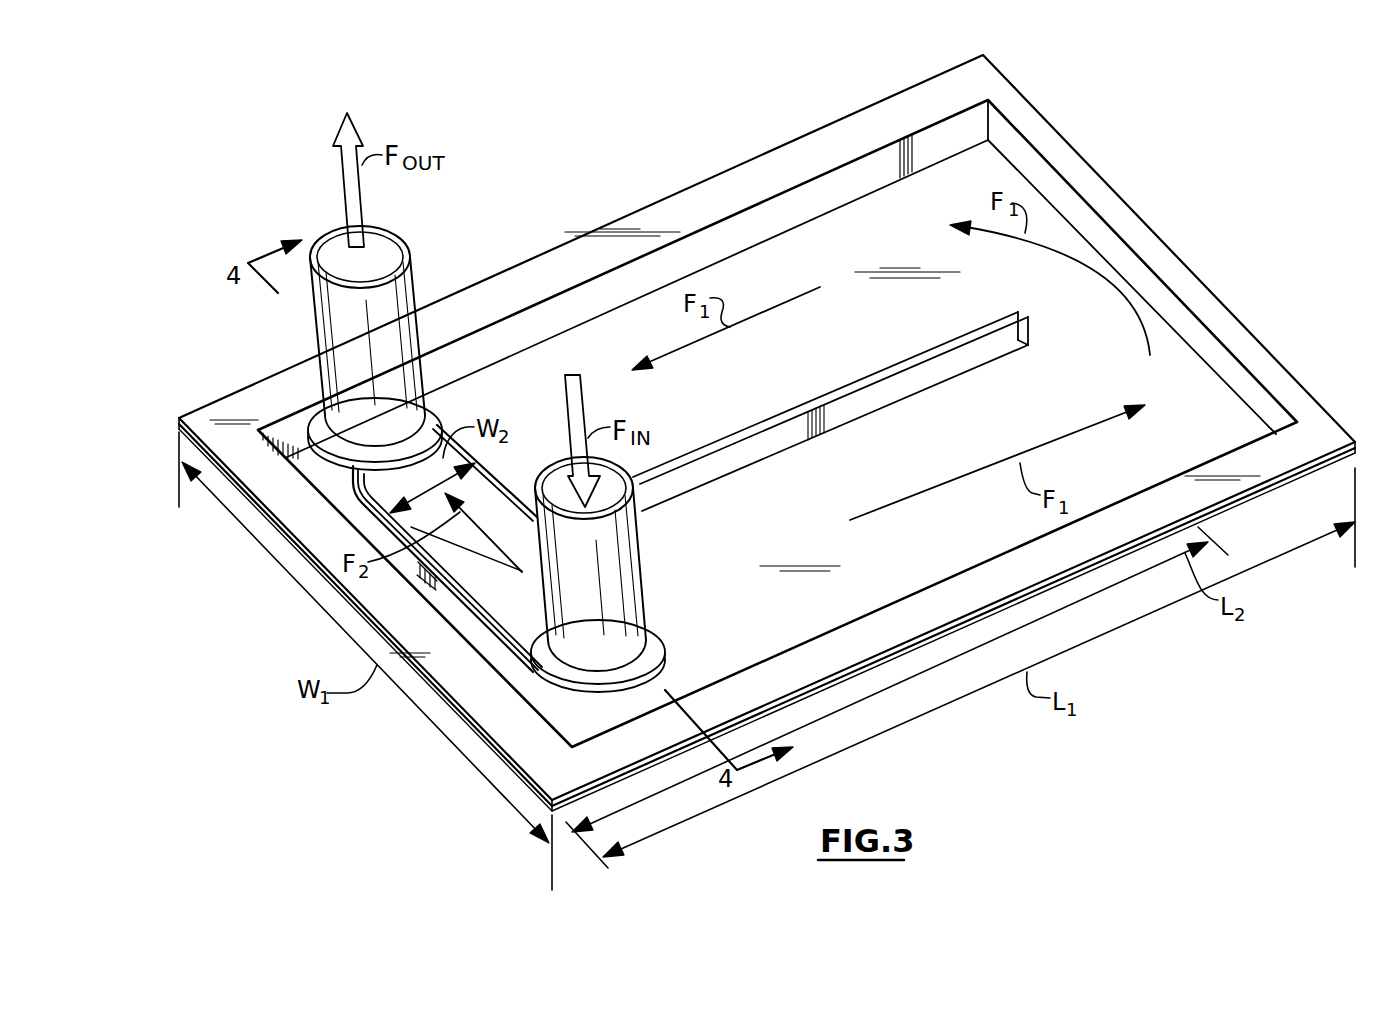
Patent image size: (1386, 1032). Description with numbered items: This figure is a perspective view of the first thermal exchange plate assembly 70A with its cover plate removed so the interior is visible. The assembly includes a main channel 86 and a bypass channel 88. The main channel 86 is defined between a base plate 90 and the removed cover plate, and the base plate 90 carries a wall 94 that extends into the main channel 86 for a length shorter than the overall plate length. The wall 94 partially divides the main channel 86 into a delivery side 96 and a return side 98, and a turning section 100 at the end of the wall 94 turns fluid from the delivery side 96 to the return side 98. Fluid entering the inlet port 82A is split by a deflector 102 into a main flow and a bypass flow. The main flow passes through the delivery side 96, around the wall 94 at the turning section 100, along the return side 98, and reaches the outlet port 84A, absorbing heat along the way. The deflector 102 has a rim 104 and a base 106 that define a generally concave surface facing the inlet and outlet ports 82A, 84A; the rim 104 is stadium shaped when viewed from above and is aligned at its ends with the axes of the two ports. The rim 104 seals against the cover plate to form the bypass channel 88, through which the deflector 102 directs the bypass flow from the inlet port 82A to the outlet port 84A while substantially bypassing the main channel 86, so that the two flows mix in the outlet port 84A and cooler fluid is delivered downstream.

The first thermal exchange plate assembly 70A is at (1062, 629).
The inlet port 82A is at (613, 572).
The outlet port 84A is at (350, 373).
The main channel 86 is at (1202, 402).
The bypass channel 88 is at (414, 577).
The base plate 90 is at (550, 775).
The wall 94 is at (978, 357).
The delivery side 96 is at (976, 550).
The return side 98 is at (785, 375).
The turning section 100 is at (1085, 305).
The deflector 102 is at (518, 680).
The rim 104 is at (423, 550).
The base 106 is at (455, 618).